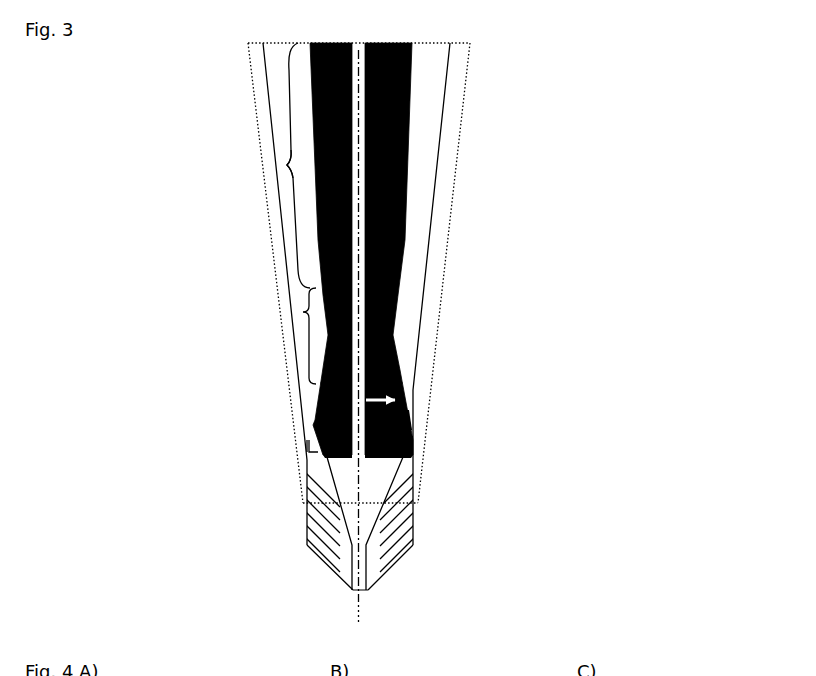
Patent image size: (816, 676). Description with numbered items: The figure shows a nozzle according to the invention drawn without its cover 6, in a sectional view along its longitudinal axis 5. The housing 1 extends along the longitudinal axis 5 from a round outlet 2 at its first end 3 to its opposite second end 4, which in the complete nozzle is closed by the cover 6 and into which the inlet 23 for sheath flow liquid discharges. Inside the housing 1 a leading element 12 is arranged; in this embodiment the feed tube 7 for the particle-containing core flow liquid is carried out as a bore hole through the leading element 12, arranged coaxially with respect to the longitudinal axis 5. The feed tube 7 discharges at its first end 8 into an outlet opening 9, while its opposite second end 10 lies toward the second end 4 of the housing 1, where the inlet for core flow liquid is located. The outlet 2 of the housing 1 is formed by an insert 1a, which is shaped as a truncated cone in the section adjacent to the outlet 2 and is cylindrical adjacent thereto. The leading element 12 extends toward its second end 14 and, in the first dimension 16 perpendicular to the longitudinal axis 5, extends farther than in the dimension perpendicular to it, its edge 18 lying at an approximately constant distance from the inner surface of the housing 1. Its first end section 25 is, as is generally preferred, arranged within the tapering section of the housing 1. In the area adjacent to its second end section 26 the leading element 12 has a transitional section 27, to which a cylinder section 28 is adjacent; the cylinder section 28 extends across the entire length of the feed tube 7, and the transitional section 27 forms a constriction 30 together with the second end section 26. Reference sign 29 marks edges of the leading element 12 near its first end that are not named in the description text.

The housing 1 is at (287, 285).
The insert 1a is at (305, 535).
The outlet 2 is at (361, 593).
The first end 3 is at (370, 590).
The second end 4 is at (473, 45).
The longitudinal axis 5 is at (362, 517).
The cover 6 is at (437, 42).
The feed tube 7 is at (358, 67).
The first end 8 is at (353, 458).
The outlet opening 9 is at (366, 458).
The second end 10 is at (365, 41).
The leading element 12 is at (401, 370).
The second end 14 is at (394, 335).
The first dimension 16 is at (405, 401).
The edge 18 is at (409, 418).
The inlet for sheath flow liquid 23 is at (290, 42).
The first end section 25 is at (305, 447).
The second end section 26 is at (303, 377).
The transitional section 27 is at (298, 312).
The cylinder section 28 is at (285, 166).
The edge 29 is at (308, 425).
The constriction 30 is at (325, 337).